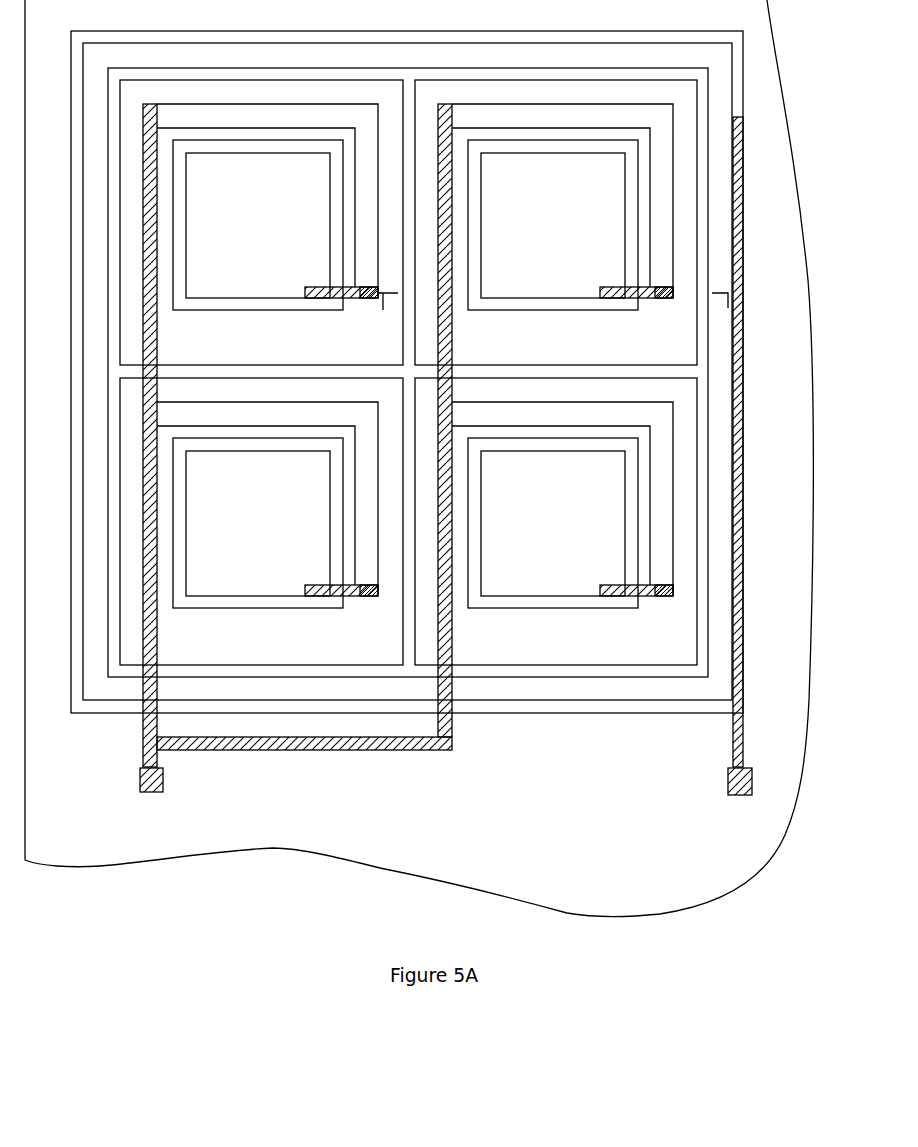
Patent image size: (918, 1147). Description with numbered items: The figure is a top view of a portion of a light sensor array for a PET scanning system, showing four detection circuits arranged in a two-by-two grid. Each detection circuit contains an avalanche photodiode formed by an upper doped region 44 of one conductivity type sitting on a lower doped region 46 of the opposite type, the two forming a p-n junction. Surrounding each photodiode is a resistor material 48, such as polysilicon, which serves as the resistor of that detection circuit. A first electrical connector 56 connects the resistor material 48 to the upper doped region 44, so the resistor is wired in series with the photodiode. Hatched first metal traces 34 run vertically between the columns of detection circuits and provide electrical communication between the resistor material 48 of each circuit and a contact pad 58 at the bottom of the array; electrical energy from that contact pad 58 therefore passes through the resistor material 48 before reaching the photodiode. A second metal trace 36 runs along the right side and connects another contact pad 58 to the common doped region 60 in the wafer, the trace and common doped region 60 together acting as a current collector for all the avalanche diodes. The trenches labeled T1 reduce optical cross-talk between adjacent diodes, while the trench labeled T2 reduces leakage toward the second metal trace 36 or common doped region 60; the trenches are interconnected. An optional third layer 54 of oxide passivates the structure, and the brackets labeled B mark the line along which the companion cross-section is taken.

The first metal trace 34 is at (292, 456).
The second metal trace 36 is at (760, 442).
The upper doped region 44 is at (595, 307).
The lower doped region 46 is at (557, 272).
The resistor material 48 is at (249, 112).
The third layer 54 is at (432, 863).
The first electrical connector 56 is at (322, 286).
The contact pad 58 is at (157, 782).
The common doped region 60 is at (660, 298).
The brackets B is at (378, 300).
The trench T1 is at (147, 727).
The trench T2 is at (742, 380).